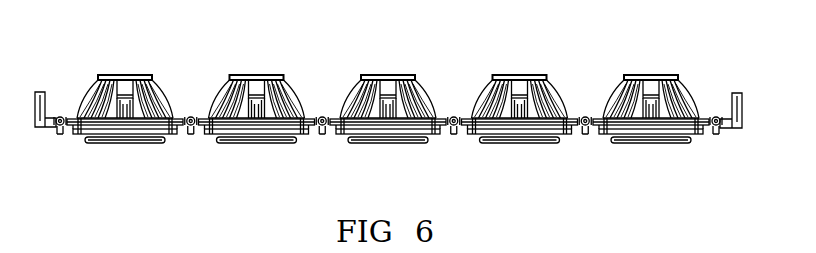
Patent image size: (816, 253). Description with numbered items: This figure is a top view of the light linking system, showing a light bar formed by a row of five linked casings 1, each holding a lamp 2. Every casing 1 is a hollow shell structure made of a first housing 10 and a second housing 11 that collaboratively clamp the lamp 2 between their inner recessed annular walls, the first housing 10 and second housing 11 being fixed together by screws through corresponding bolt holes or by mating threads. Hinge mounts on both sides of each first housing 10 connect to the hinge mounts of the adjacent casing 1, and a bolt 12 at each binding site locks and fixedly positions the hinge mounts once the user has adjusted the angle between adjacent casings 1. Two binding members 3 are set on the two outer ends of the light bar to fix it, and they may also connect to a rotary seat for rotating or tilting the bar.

The casing 1 is at (142, 140).
The lamp 2 is at (119, 88).
The binding member 3 is at (44, 92).
The first housing 10 is at (128, 128).
The second housing 11 is at (106, 141).
The bolt 12 is at (61, 117).